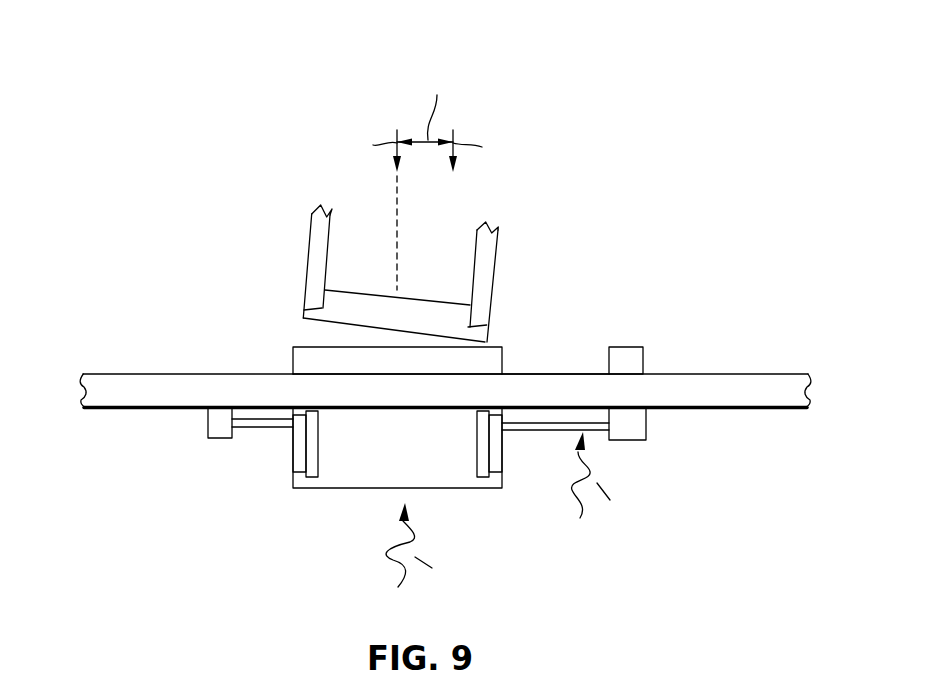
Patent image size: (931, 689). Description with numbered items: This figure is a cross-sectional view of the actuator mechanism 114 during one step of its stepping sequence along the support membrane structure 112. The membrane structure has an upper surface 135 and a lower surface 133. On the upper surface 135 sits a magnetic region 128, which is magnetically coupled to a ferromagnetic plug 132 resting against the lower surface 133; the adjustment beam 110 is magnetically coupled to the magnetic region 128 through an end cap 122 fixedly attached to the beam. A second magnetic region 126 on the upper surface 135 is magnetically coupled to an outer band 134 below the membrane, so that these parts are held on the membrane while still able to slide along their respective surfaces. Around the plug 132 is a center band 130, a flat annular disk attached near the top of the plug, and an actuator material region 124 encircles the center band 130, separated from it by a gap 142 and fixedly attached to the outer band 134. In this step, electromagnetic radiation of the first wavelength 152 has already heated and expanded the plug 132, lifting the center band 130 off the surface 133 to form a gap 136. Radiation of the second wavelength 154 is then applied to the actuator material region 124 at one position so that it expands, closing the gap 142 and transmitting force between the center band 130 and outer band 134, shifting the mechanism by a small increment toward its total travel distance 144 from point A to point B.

The adjustment beam 110 is at (488, 257).
The support membrane structure 112 is at (775, 385).
The actuator mechanism 114 is at (168, 160).
The end cap 122 is at (435, 303).
The actuator material region 124 is at (243, 430).
The magnetic region 126 is at (630, 347).
The magnetic region 128 is at (308, 348).
The center band 130 is at (300, 467).
The ferromagnetic plug 132 is at (420, 457).
The surface 133 is at (723, 410).
The outer band 134 is at (215, 440).
The surface 135 is at (703, 373).
The gap 136 is at (278, 409).
The gap 142 is at (280, 447).
The distance d1 144 is at (427, 165).
The wavelength λ1 152 is at (427, 562).
The wavelength λ2 154 is at (610, 493).